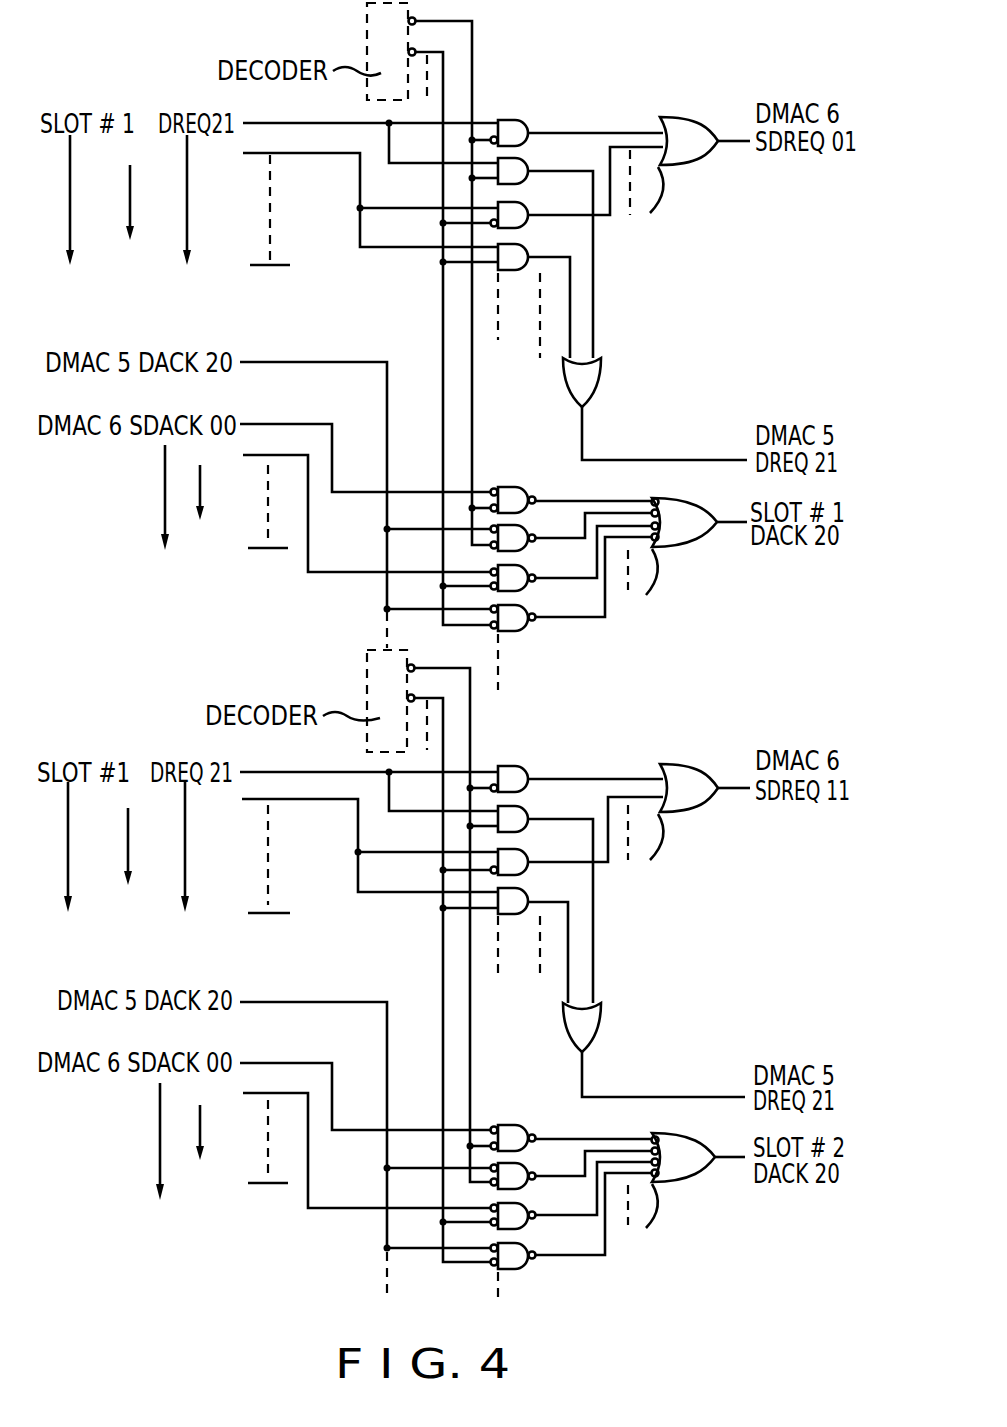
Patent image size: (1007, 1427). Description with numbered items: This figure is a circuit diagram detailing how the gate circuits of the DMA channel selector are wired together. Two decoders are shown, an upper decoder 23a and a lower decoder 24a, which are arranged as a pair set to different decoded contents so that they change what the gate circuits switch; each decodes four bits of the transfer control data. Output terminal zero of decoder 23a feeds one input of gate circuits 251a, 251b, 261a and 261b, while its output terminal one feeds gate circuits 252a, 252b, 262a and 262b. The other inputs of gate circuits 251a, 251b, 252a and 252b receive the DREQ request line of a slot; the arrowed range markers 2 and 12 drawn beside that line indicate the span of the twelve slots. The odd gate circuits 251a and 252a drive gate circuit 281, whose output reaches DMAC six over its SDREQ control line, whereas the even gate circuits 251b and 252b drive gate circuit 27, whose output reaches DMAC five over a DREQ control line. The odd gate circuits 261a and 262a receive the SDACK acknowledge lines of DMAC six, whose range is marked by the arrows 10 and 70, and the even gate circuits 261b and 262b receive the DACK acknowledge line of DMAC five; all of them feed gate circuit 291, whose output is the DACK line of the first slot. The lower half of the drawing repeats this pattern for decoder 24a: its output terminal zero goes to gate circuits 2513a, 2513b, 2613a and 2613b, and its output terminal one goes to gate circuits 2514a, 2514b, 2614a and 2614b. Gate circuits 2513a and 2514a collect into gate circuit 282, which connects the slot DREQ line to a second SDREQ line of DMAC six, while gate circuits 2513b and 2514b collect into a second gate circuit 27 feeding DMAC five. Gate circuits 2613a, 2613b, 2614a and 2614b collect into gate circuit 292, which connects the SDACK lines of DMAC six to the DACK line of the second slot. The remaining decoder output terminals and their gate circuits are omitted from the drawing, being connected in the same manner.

The system bus 2 is at (130, 512).
The slot #1 bus lines 12 is at (127, 529).
The DMA controller bus 10 is at (201, 799).
The DMA controller bus lines 70 is at (184, 822).
The decoder 23a is at (367, 34).
The decoder 24a is at (367, 673).
The gate circuit 27 is at (602, 372).
The gate circuit 251a is at (515, 120).
The gate circuit 251b is at (522, 159).
The gate circuit 252a is at (518, 203).
The gate circuit 252b is at (522, 245).
The gate circuit 281 is at (678, 114).
The gate circuit 261a is at (512, 487).
The gate circuit 261b is at (527, 551).
The gate circuit 262a is at (526, 590).
The gate circuit 262b is at (522, 631).
The gate circuit 291 is at (690, 546).
The gate circuit 2513a is at (516, 767).
The gate circuit 2513b is at (526, 810).
The gate circuit 2514a is at (516, 851).
The gate circuit 2514b is at (516, 892).
The gate circuit 282 is at (686, 760).
The gate circuit 2613a is at (511, 1124).
The gate circuit 2613b is at (527, 1164).
The gate circuit 2614a is at (528, 1229).
The gate circuit 2614b is at (515, 1270).
The gate circuit 292 is at (700, 1181).